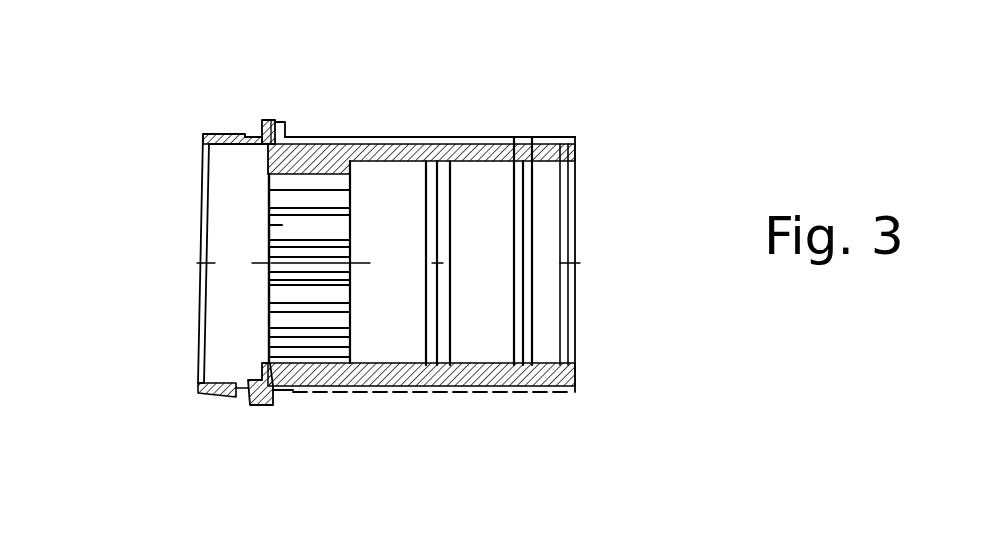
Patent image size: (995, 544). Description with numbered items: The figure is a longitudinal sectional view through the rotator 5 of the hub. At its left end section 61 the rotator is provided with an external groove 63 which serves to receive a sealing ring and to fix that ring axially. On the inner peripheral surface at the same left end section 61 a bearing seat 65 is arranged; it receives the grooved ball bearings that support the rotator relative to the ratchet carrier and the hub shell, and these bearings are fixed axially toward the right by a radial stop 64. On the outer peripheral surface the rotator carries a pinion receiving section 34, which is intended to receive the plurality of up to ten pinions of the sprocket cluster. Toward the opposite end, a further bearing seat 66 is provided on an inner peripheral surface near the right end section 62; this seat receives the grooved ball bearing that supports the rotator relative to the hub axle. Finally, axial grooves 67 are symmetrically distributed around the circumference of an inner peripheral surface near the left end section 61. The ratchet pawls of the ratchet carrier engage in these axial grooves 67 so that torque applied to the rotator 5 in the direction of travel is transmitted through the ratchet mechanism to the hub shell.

The rotator 5 is at (387, 113).
The pinion receiving section 34 is at (356, 134).
The left end section 61 is at (227, 118).
The right end section 62 is at (530, 127).
The external groove 63 is at (252, 130).
The radial stop 64 is at (266, 152).
The bearing seat 65 is at (235, 150).
The bearing seat 66 is at (480, 165).
The axial grooves 67 is at (330, 230).